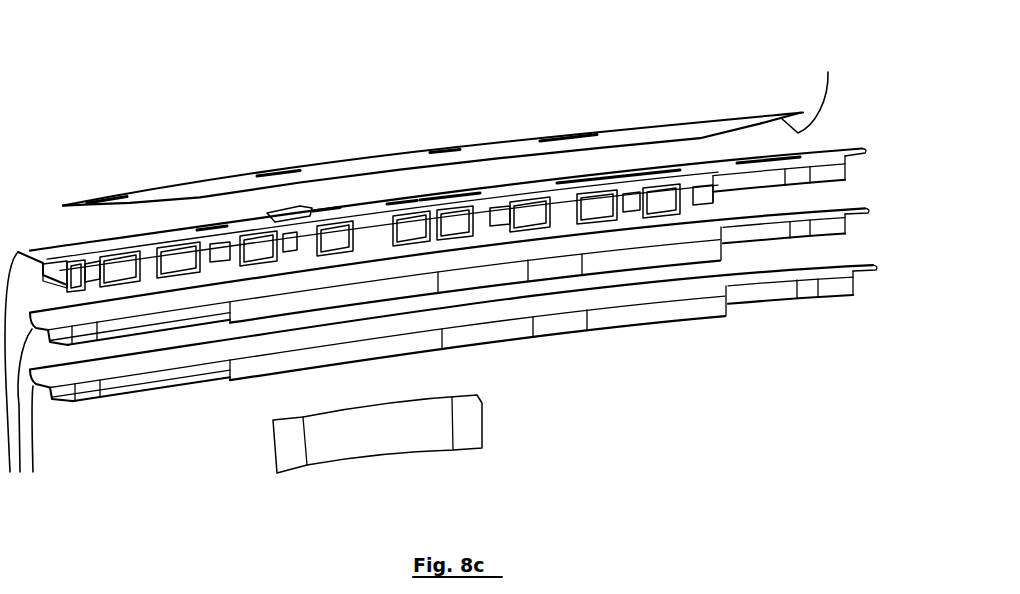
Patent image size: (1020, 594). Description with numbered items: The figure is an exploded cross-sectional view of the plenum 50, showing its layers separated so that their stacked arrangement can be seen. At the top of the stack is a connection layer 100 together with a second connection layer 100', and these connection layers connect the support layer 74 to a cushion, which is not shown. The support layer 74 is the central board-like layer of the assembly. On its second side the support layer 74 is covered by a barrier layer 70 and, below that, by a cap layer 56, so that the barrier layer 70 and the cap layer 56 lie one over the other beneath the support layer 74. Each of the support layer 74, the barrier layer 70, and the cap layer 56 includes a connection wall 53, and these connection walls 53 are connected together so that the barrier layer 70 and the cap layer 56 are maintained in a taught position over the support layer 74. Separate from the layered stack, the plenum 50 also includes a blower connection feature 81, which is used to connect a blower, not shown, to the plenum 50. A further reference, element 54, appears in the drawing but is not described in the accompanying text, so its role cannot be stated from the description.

The plenum 50 is at (192, 112).
The connection wall 53 is at (19, 376).
The contact pad 54 is at (293, 196).
The cap layer 56 is at (846, 293).
The barrier layer 70 is at (832, 232).
The support layer 74 is at (847, 173).
The blower connection feature 81 is at (292, 459).
The connection layer 100 is at (433, 134).
The second connection layer 100' is at (811, 89).